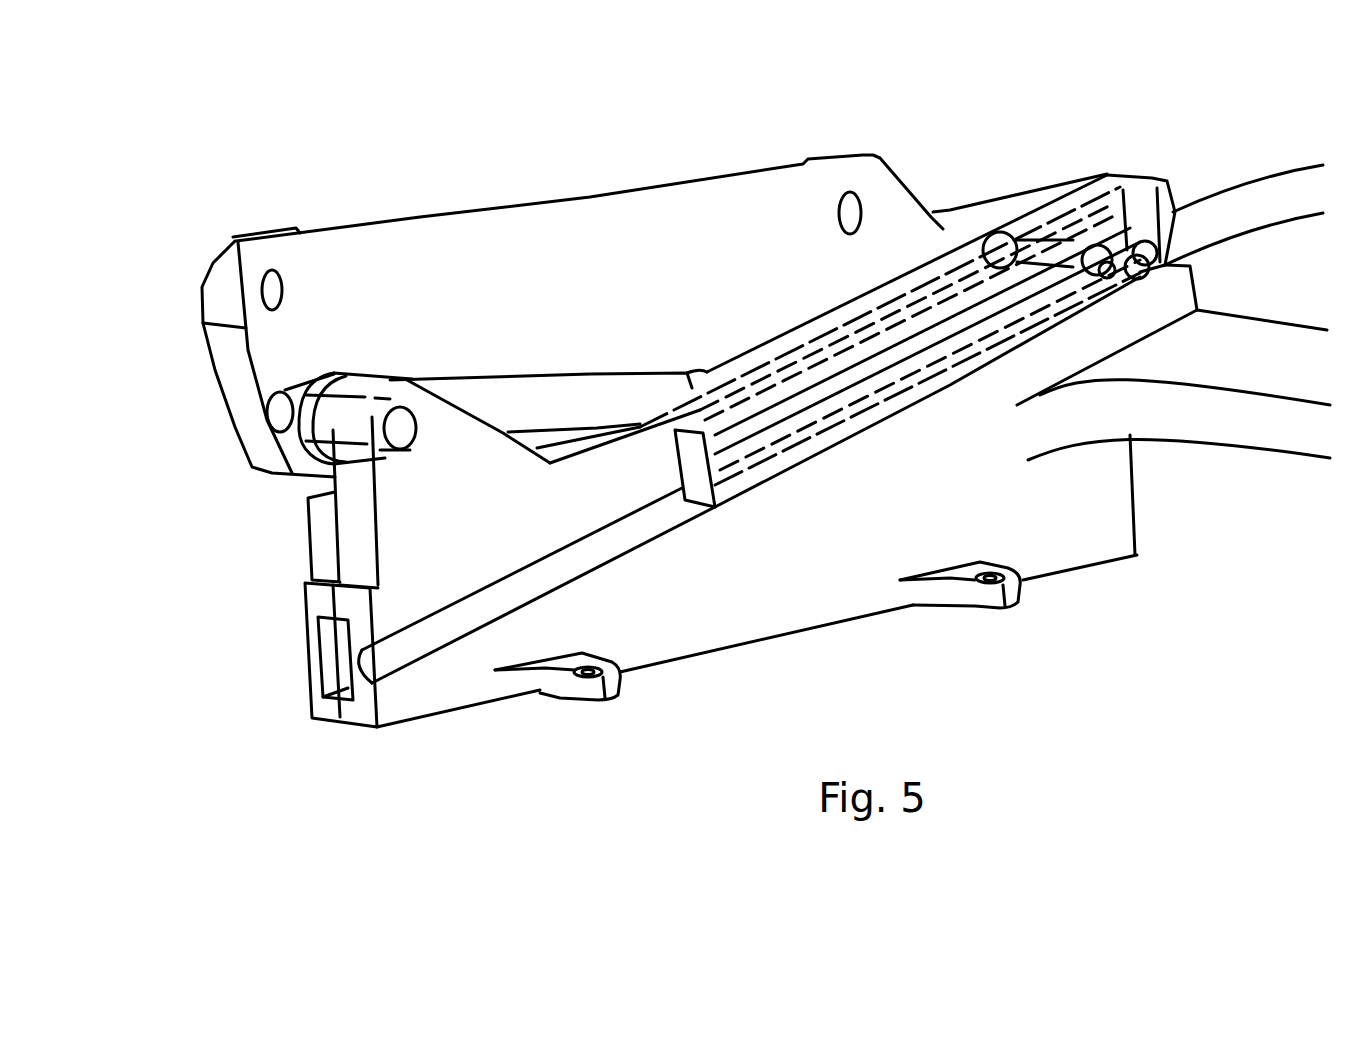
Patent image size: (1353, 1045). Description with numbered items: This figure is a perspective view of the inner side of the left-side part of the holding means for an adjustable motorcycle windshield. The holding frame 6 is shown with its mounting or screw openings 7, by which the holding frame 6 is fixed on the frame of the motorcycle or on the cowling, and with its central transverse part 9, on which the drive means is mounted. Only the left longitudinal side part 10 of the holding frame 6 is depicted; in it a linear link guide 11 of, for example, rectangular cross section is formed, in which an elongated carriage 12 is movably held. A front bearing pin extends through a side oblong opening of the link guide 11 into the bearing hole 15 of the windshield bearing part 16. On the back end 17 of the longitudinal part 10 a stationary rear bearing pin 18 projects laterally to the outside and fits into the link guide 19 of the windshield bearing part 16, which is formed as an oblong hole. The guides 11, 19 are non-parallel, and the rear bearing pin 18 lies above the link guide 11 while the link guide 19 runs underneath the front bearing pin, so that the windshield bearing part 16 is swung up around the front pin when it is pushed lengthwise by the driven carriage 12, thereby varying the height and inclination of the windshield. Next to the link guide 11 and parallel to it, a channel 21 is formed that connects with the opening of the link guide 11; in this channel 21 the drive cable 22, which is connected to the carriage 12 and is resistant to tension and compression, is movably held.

The holding frame 6 is at (1130, 567).
The mounting or screw openings 7 is at (582, 673).
The central transverse part 9 is at (1277, 373).
The longitudinal side part 10 is at (818, 590).
The linear link guide 11 is at (333, 660).
The carriage 12 is at (739, 427).
The bearing hole 15 is at (996, 240).
The windshield bearing part 16 is at (443, 253).
The back end 17 is at (363, 525).
The rear bearing pin 18 is at (397, 423).
The link guide 19 is at (567, 400).
The channel 21 is at (515, 588).
The drive cable 22 is at (1158, 262).